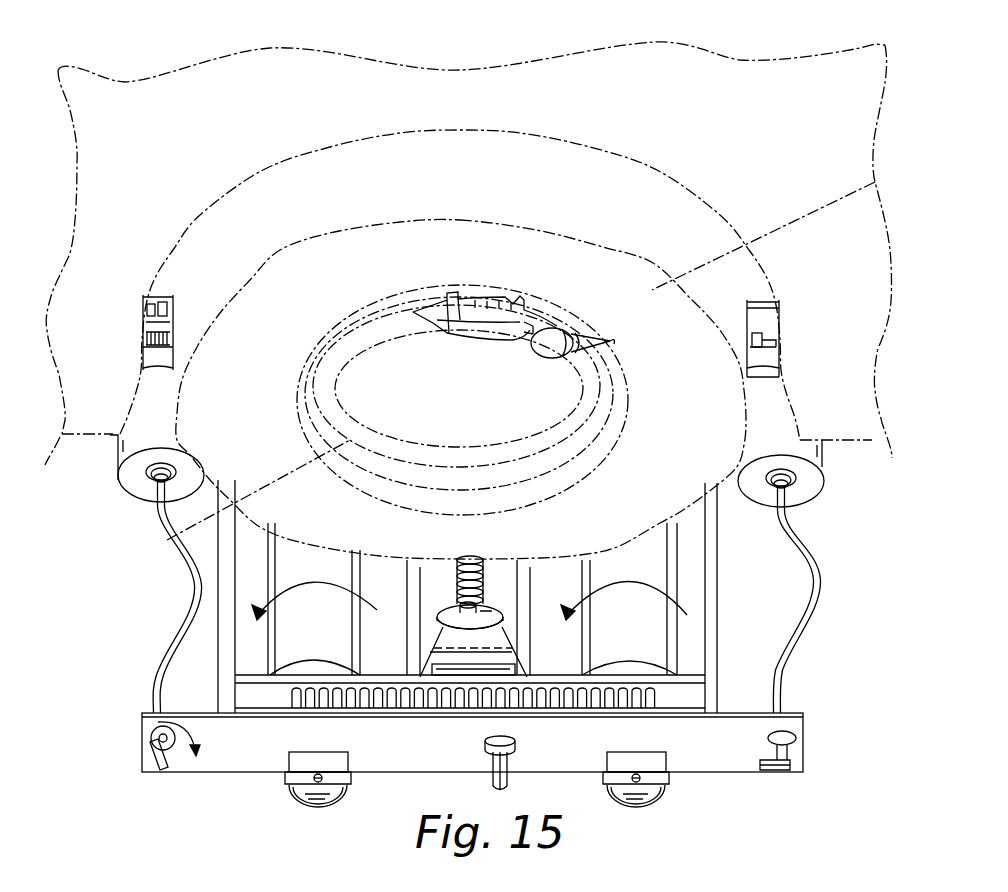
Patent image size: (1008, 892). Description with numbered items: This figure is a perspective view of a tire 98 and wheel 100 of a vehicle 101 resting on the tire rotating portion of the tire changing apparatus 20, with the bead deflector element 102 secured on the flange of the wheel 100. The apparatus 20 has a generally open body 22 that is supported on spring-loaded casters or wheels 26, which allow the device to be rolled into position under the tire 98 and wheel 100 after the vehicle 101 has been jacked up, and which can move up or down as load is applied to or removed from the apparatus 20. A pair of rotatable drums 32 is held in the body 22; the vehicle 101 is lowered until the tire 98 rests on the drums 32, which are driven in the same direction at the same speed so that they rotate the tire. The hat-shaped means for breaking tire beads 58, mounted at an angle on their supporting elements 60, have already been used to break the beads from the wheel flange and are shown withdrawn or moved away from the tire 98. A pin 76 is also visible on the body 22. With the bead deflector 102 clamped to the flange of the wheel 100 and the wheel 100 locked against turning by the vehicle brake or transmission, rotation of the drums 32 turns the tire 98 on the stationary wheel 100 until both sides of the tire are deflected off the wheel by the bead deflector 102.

The tire changing apparatus 20 is at (265, 812).
The body 22 is at (708, 767).
The casters or wheels 26 is at (318, 804).
The drums 32 is at (325, 645).
The means for breaking tire beads 58 is at (500, 613).
The supporting elements 60 is at (500, 637).
The pin 76 is at (508, 787).
The tire 98 is at (872, 182).
The wheel 100 is at (167, 540).
The vehicle 101 is at (742, 70).
The bead deflector element 102 is at (497, 292).